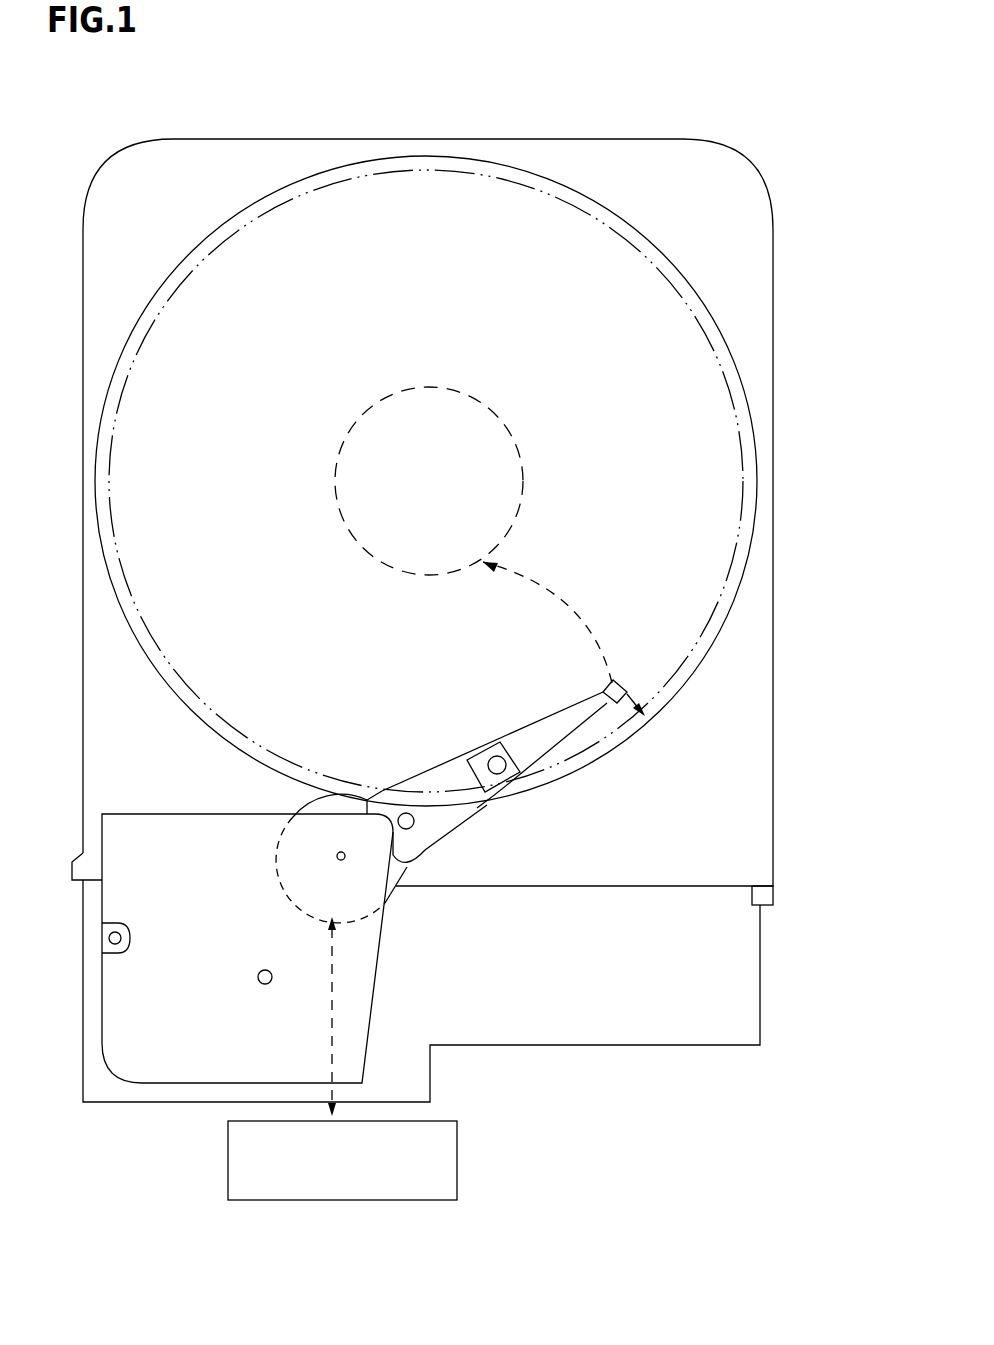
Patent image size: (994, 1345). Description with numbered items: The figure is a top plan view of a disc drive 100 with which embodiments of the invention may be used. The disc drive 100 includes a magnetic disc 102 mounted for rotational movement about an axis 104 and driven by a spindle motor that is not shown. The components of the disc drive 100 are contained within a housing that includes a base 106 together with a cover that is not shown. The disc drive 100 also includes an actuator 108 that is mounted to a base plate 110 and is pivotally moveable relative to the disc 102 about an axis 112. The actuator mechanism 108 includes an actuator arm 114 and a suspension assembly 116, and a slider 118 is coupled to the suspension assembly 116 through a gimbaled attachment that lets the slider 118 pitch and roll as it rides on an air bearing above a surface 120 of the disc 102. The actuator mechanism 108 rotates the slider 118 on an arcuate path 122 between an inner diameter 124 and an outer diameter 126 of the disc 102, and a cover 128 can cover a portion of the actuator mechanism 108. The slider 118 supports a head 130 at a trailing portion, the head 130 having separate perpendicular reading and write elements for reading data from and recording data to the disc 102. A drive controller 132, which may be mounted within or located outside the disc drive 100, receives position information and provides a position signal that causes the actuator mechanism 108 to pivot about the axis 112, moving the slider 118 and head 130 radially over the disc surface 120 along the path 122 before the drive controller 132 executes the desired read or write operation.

The disc drive 100 is at (236, 126).
The magnetic disc 102 is at (430, 294).
The axis 104 is at (450, 480).
The base 106 is at (773, 275).
The actuator 108 is at (404, 963).
The base plate 110 is at (642, 1047).
The axis 112 is at (335, 850).
The actuator arm 114 is at (430, 832).
The suspension assembly 116 is at (530, 723).
The slider 118 is at (604, 686).
The surface 120 is at (703, 425).
The arcuate path 122 is at (543, 598).
The inner diameter 124 is at (523, 477).
The outer diameter 126 is at (745, 473).
The cover 128 is at (157, 1067).
The head 130 is at (622, 686).
The drive controller 132 is at (457, 1163).